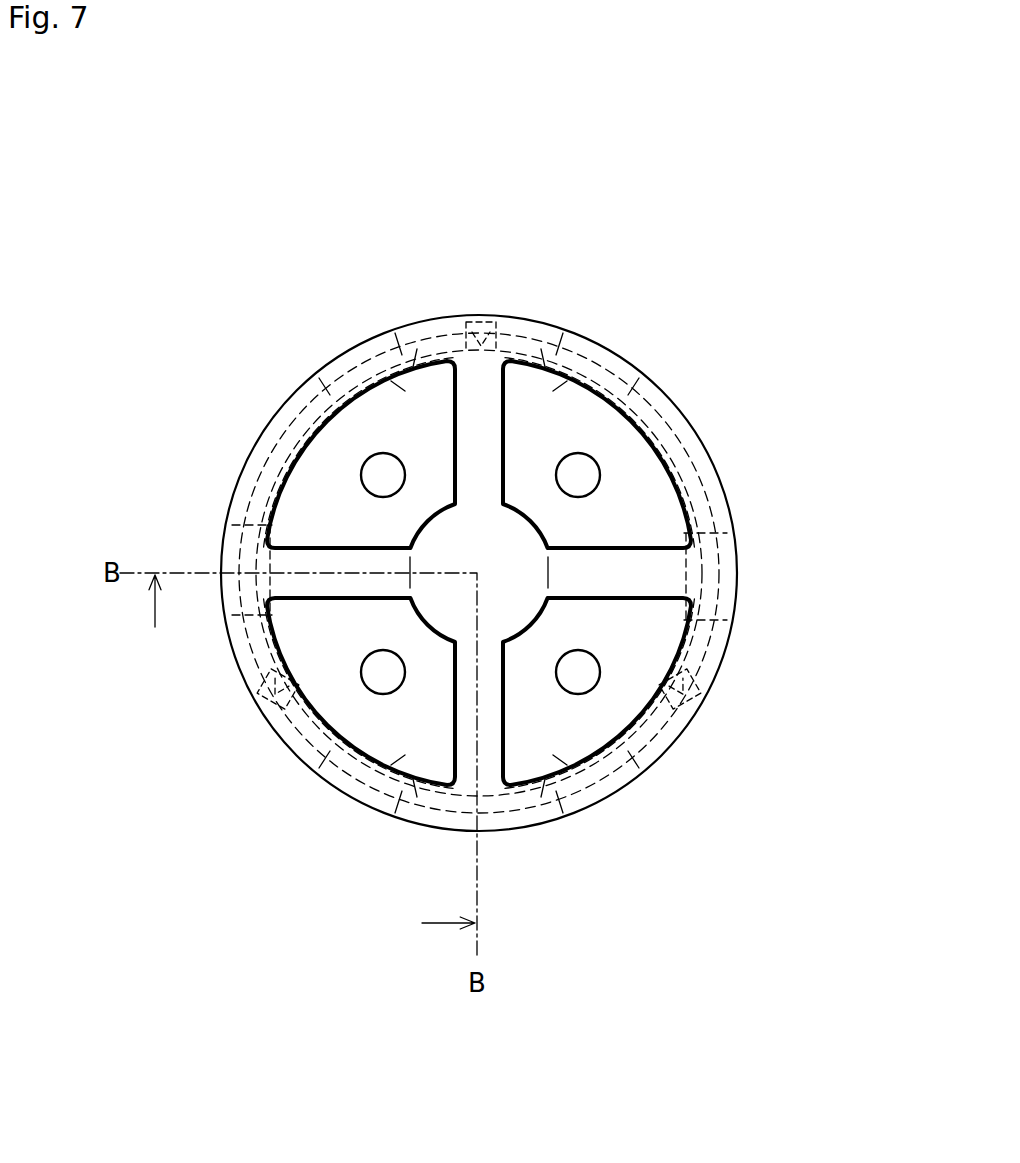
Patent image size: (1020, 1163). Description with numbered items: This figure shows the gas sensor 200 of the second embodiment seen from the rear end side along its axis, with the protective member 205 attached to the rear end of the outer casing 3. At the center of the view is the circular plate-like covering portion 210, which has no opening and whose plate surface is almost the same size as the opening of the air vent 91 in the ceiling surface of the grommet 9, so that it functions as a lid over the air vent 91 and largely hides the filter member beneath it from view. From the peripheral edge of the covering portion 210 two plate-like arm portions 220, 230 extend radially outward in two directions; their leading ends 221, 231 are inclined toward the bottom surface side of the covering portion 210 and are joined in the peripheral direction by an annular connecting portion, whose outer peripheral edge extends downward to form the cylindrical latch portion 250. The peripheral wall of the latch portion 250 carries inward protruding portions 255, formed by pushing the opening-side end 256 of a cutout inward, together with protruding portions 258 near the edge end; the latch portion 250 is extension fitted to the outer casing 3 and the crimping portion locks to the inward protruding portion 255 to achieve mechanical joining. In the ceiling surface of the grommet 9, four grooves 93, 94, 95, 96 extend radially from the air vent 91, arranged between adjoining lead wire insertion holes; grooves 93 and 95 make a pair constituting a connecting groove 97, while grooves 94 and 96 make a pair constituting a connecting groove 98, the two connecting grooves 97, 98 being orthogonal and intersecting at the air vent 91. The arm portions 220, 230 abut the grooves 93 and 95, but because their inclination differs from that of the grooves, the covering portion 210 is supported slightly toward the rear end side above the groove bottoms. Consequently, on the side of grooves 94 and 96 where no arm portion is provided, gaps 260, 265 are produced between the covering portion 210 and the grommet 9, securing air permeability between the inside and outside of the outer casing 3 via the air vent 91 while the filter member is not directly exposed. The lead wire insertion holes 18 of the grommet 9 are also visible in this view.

The gas sensor 200 is at (657, 179).
The protective member 205 is at (693, 337).
The latch portion 250 is at (692, 393).
The leading end 221 is at (194, 542).
The leading end 231 is at (764, 583).
The protruding portion 258 is at (488, 318).
The inward protruding portion 255 is at (454, 564).
The end 256 is at (438, 573).
The grommet 9 is at (615, 454).
The covering portion 210 is at (361, 619).
The arm portion 220 is at (309, 684).
The arm portion 230 is at (643, 686).
The through hole 18 is at (426, 574).
The gap 260 is at (481, 478).
The gap 265 is at (484, 674).
The groove 94 is at (477, 415).
The connecting groove 98 is at (471, 577).
The groove 96 is at (456, 692).
The outer casing 3 is at (553, 330).
The air vent 91 is at (528, 532).
The groove 93 is at (318, 560).
The connecting groove 97 is at (472, 479).
The groove 95 is at (650, 547).